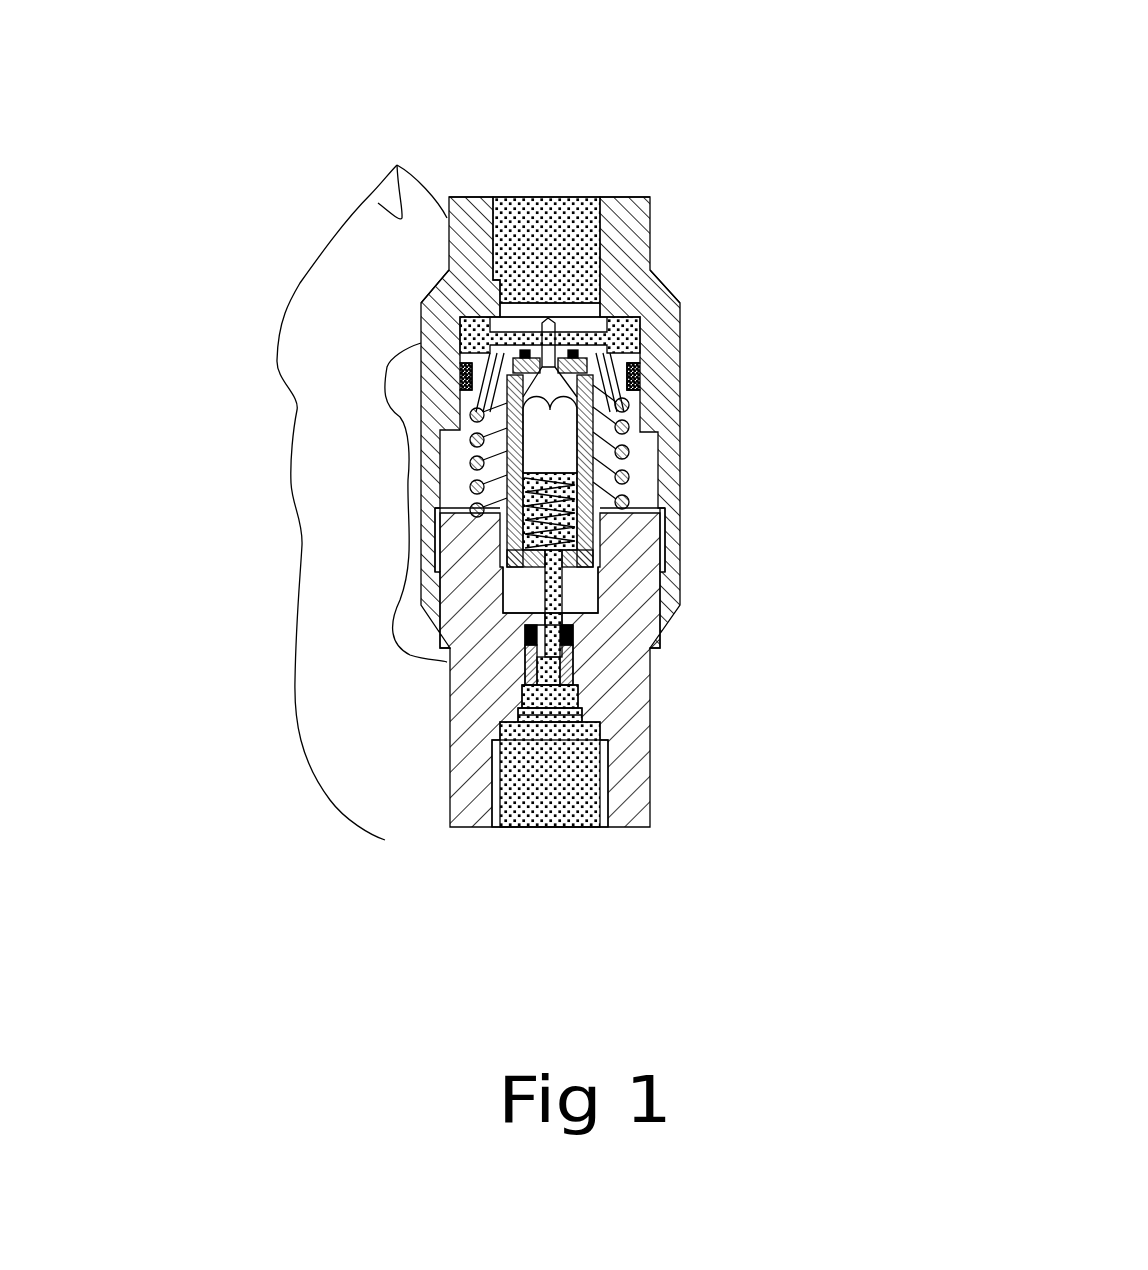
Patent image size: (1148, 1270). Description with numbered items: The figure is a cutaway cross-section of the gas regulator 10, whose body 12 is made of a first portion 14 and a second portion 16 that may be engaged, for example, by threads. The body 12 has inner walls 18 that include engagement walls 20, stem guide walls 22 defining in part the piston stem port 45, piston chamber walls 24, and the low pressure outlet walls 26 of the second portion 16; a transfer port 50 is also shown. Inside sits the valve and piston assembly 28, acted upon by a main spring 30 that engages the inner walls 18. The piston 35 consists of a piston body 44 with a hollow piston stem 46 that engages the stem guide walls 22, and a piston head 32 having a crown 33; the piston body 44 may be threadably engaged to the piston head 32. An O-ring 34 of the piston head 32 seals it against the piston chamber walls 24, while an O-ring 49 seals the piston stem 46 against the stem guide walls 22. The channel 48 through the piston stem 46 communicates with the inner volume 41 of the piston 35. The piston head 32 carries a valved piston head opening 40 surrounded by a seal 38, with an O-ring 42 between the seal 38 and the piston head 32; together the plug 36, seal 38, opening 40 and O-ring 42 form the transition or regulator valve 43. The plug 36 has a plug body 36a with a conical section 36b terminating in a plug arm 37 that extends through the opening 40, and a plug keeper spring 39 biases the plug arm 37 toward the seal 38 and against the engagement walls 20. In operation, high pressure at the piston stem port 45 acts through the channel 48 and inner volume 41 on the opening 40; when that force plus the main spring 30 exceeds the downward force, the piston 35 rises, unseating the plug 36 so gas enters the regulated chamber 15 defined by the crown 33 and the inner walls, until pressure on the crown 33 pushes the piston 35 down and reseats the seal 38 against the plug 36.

The gas regulator 10 is at (519, 462).
The body 12 is at (290, 476).
The first portion of body 14 is at (620, 695).
The regulated chamber 15 is at (421, 303).
The second portion of body 16 is at (670, 350).
The inner walls 18 is at (597, 780).
The engagement walls 20 is at (528, 350).
The stem guide walls 22 is at (598, 610).
The piston chamber walls 24 is at (615, 250).
The low pressure outlet walls 26 is at (578, 247).
The valve and piston assembly 28 is at (512, 483).
The main spring 30 is at (562, 452).
The piston head 32 is at (460, 320).
The crown of piston head 33 is at (548, 318).
The O-ring of piston head 34 is at (460, 368).
The piston 35 is at (640, 378).
The plug 36 is at (377, 410).
The plug body 36a is at (488, 490).
The conical section 36b is at (468, 412).
The plug arm 37 is at (605, 267).
The seal 38 is at (618, 372).
The plug keeper spring 39 is at (662, 512).
The piston head opening 40 is at (640, 365).
The inner volume of piston 41 is at (655, 410).
The O-ring 42 is at (490, 355).
The transition or regulator valve 43 is at (640, 292).
The piston body 44 is at (600, 538).
The piston stem port 45 is at (585, 693).
The piston stem 46 is at (548, 592).
The channel 48 is at (573, 632).
The O-ring 49 is at (552, 665).
The transfer port 50 is at (520, 325).